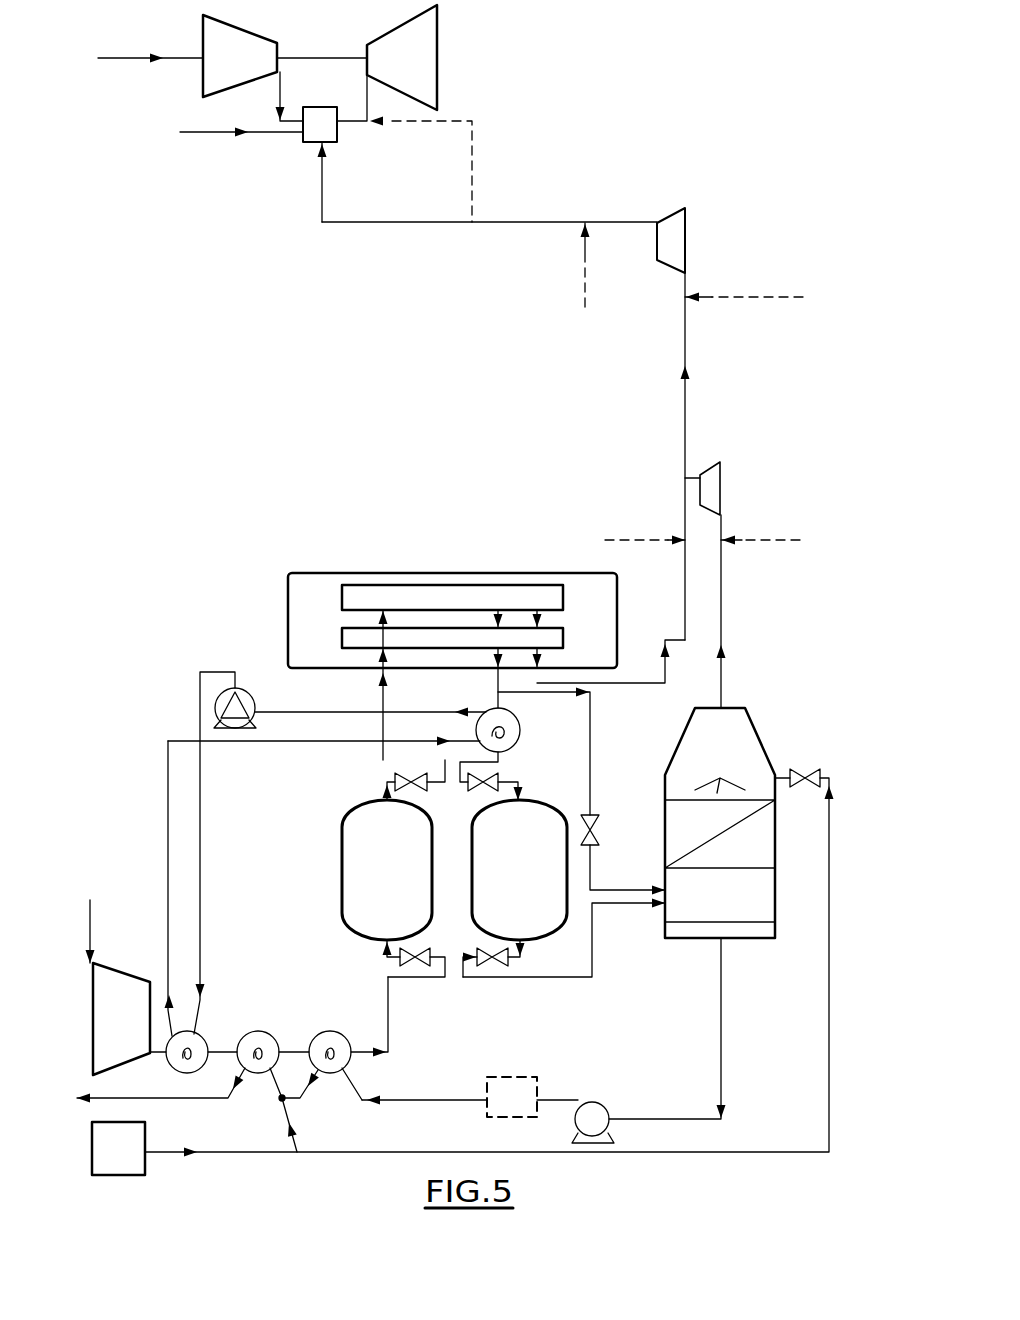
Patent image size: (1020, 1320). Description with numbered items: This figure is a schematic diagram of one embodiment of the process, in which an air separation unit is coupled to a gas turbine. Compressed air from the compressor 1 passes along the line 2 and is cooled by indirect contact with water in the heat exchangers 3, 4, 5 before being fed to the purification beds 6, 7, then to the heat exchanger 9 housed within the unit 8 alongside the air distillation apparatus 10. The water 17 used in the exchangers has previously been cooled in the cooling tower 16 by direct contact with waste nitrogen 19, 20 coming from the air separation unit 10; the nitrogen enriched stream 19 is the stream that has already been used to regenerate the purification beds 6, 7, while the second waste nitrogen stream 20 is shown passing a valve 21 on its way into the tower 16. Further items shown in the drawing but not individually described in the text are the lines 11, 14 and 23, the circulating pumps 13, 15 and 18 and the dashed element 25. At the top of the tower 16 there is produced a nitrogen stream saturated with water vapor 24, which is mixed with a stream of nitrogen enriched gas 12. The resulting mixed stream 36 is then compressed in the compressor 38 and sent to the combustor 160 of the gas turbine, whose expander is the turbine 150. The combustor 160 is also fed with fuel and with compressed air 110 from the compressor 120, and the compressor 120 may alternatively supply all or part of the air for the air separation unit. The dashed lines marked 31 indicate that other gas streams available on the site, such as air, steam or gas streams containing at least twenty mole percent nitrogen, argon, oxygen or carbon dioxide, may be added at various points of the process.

The compressor 1 is at (103, 1020).
The compressed air line 2 is at (388, 1005).
The heat exchanger 3 is at (207, 1040).
The heat exchanger 4 is at (268, 1033).
The heat exchanger 5 is at (340, 1033).
The purification bed 6 is at (342, 870).
The purification bed 7 is at (553, 812).
The fuel cell housing 8 is at (363, 573).
The heat exchanger 9 is at (342, 637).
The air distillation apparatus 10 is at (563, 597).
The outlet line 11 is at (498, 672).
The stream of nitrogen enriched gas 12 is at (628, 683).
The heat exchanger pump 13 is at (520, 738).
The return line 14 is at (160, 829).
The pump 15 is at (248, 690).
The cooling tower 16 is at (765, 740).
The water 17 is at (715, 1055).
The pump 18 is at (600, 1103).
The nitrogen enriched stream 19 is at (543, 977).
The waste nitrogen stream 20 is at (590, 775).
The valve 21 is at (600, 826).
The return line 23 is at (829, 1040).
The nitrogen stream saturated with water vapor 24 is at (722, 678).
The processing unit 25 is at (525, 1077).
The gas stream 31 is at (585, 270).
The mixed stream 36 is at (685, 335).
The compressor 38 is at (674, 238).
The compressed air 110 is at (281, 86).
The compressor 120 is at (238, 32).
The turbine 150 is at (427, 78).
The combustor 160 is at (337, 134).